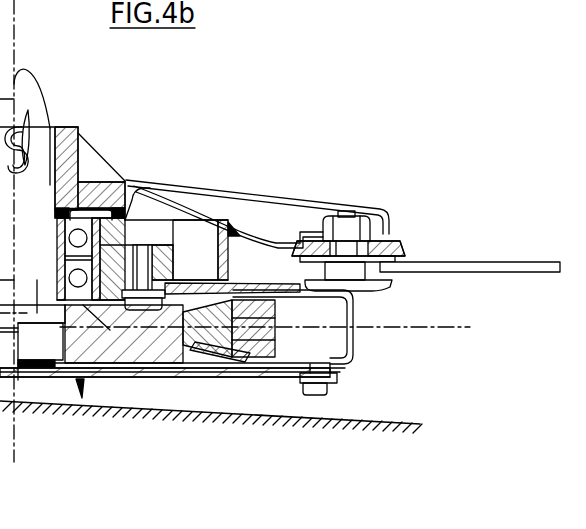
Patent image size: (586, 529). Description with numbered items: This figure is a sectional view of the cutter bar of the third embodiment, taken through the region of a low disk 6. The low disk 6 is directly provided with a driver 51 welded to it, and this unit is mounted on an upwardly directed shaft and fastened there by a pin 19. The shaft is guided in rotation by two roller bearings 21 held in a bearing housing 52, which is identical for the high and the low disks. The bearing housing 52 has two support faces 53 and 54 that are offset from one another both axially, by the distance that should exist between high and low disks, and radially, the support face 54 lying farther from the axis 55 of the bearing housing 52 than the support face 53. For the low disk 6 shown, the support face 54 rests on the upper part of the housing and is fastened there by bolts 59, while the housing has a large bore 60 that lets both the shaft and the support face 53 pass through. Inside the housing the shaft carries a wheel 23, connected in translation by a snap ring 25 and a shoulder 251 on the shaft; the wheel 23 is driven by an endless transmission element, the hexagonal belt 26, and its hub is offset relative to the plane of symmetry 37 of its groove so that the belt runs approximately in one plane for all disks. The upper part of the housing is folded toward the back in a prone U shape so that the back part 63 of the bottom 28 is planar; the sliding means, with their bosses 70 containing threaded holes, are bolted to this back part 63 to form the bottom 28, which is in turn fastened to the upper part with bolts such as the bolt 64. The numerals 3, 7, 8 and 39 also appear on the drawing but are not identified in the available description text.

The frame 3 is at (7, 79).
The low disk 6 is at (205, 200).
The rod 7 is at (537, 262).
The support 8 is at (7, 255).
The pin 19 is at (25, 145).
The roller bearing 21 is at (100, 263).
The wheel 23 is at (203, 348).
The snap ring 25 is at (44, 372).
The hexagonal belt 26 is at (262, 347).
The bottom 28 is at (86, 398).
The plane of symmetry 37 is at (421, 327).
The lower spring leaf with bolt 39 is at (258, 236).
The driver 51 is at (76, 130).
The bearing housing 52 is at (165, 250).
The support face 53 is at (106, 310).
The support face 54 is at (160, 270).
The axis 55 is at (14, 19).
The bolt 59 is at (150, 345).
The large bore 60 is at (85, 382).
The back part 63 is at (145, 373).
The bolt 64 is at (328, 390).
The boss 70 is at (63, 378).
The shoulder 251 is at (13, 291).